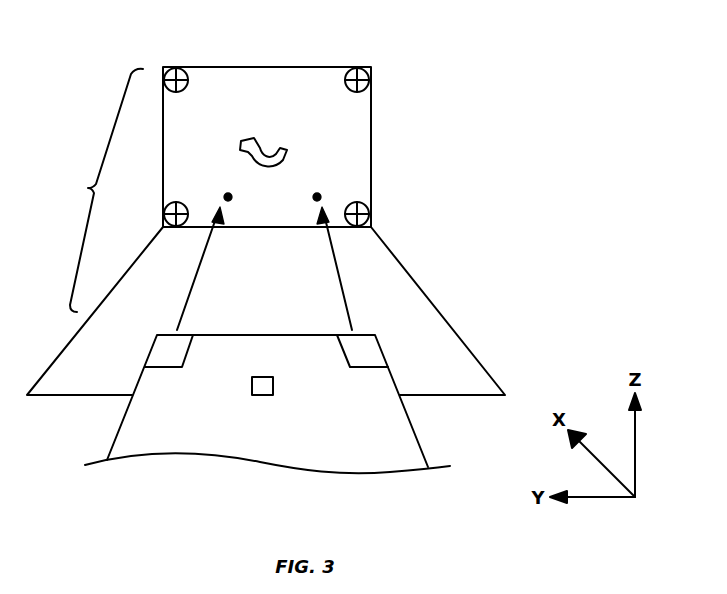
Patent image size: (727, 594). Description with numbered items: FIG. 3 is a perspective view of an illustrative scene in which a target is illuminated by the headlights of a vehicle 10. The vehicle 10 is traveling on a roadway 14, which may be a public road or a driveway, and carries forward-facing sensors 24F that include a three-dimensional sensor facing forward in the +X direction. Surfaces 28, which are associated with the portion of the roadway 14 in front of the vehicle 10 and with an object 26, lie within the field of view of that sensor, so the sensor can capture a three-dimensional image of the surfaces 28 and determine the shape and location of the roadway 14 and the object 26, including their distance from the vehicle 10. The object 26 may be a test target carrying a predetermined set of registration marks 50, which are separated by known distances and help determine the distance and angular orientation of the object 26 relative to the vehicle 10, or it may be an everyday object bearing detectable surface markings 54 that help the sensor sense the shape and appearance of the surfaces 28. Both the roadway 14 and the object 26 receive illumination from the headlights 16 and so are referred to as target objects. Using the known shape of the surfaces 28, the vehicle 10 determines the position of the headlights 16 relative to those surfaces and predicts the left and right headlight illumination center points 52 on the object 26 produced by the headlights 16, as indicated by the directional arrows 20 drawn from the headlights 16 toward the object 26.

The vehicle 10 is at (310, 458).
The roadway 14 is at (442, 333).
The headlights 16 is at (168, 360).
The insertion direction arrows 20 is at (202, 277).
The forward-facing sensors 24F is at (273, 385).
The object 26 is at (362, 142).
The surfaces 28 is at (102, 190).
The registration marks 50 is at (185, 82).
The headlight illumination center points 52 is at (227, 193).
The surface markings 54 is at (258, 140).